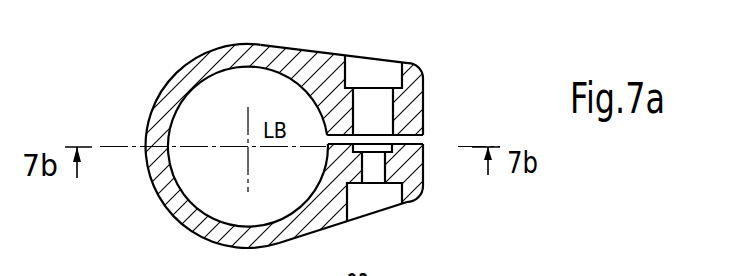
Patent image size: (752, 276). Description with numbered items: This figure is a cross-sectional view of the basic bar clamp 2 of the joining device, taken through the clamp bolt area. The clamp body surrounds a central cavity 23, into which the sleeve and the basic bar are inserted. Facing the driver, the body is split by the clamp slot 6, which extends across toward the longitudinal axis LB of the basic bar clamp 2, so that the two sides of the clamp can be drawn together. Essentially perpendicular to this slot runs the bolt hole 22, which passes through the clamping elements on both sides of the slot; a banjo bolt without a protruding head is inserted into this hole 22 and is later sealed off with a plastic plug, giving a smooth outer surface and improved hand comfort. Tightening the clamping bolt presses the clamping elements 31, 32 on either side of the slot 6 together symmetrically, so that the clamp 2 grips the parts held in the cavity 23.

The basic bar clamp 2 is at (277, 50).
The clamp slot 6 is at (414, 137).
The bolt hole 22 is at (380, 67).
The cavity 23 is at (193, 97).
The upper clamping jaw 31 is at (423, 69).
The lower clamping jaw 32 is at (423, 192).